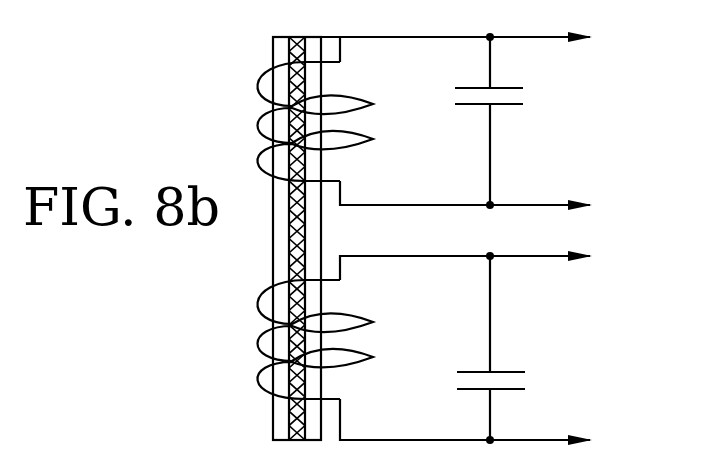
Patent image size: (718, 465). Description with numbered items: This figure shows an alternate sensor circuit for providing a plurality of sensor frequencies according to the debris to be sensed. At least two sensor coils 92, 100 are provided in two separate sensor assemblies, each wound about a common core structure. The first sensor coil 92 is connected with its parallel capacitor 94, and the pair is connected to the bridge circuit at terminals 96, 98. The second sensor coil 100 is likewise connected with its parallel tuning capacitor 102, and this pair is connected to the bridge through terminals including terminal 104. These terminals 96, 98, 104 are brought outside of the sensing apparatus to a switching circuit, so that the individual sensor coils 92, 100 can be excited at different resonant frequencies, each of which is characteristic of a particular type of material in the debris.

The sensor coil 92 is at (255, 123).
The parallel capacitor 94 is at (508, 105).
The terminal 96 is at (578, 38).
The terminal 98 is at (577, 203).
The sensor coil 100 is at (257, 335).
The parallel tuning capacitor 102 is at (505, 370).
The terminal 104 is at (573, 260).